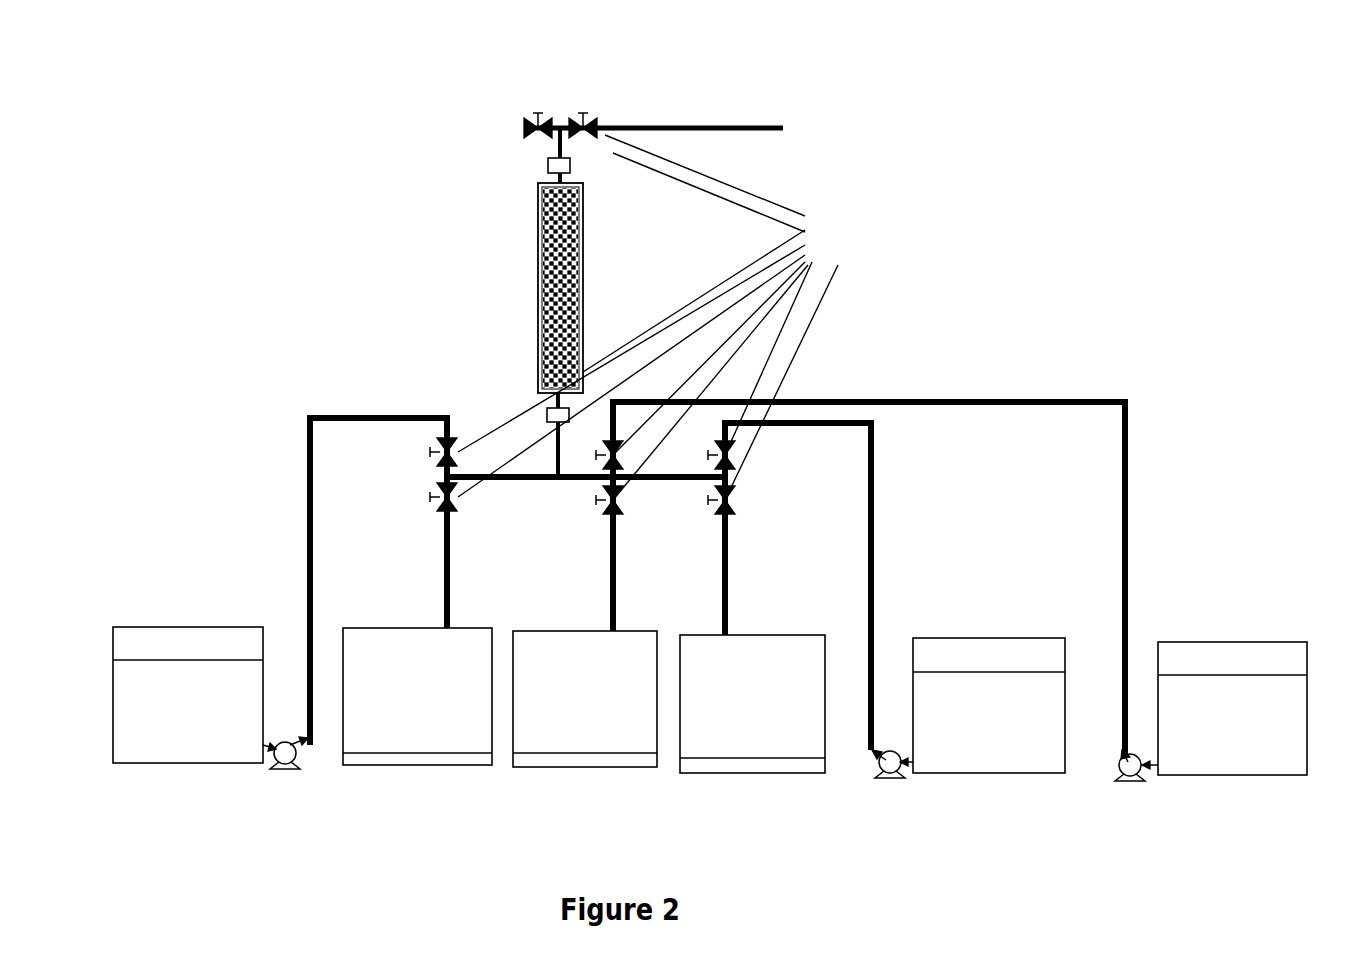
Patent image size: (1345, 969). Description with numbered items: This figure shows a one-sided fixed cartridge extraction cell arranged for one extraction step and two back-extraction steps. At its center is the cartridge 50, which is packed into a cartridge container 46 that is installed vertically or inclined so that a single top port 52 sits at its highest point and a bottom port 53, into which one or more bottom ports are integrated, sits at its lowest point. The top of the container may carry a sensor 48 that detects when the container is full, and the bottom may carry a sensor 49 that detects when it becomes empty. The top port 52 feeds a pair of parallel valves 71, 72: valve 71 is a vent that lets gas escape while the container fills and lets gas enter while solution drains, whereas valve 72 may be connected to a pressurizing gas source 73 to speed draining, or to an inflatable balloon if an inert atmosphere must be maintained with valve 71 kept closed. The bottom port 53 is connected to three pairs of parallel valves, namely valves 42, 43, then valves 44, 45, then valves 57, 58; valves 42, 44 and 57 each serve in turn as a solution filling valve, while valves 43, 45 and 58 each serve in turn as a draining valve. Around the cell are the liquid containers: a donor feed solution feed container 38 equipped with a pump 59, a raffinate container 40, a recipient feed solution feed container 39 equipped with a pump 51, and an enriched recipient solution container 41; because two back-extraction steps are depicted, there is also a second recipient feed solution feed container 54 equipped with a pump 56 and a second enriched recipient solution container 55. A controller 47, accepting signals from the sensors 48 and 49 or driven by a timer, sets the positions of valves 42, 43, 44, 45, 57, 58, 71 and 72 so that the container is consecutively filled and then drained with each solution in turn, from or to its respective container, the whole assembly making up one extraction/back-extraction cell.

The pressurizing gas source 73 is at (769, 107).
The vent valve 71 is at (548, 107).
The valve 72 is at (594, 103).
The sensor 48 is at (572, 167).
The cartridge container 46 is at (583, 235).
The cartridge 50 is at (541, 249).
The top port 52 is at (547, 182).
The bottom port 53 is at (546, 400).
The sensor 49 is at (521, 450).
The solution filling valve 44 is at (427, 456).
The draining valve 45 is at (427, 494).
The solution filling valve 57 is at (634, 456).
The draining valve 58 is at (634, 500).
The solution filling valve 42 is at (746, 456).
The draining valve 43 is at (746, 500).
The controller 47 is at (652, 317).
The donor feed solution feed container 38 is at (188, 695).
The raffinate container 40 is at (417, 696).
The second enriched recipient solution container 55 is at (585, 699).
The enriched recipient solution container 41 is at (752, 704).
The recipient feed solution feed container 39 is at (989, 705).
The second recipient feed solution feed container 54 is at (1232, 708).
The pump 59 is at (279, 781).
The pump 51 is at (886, 793).
The pump 56 is at (1131, 791).